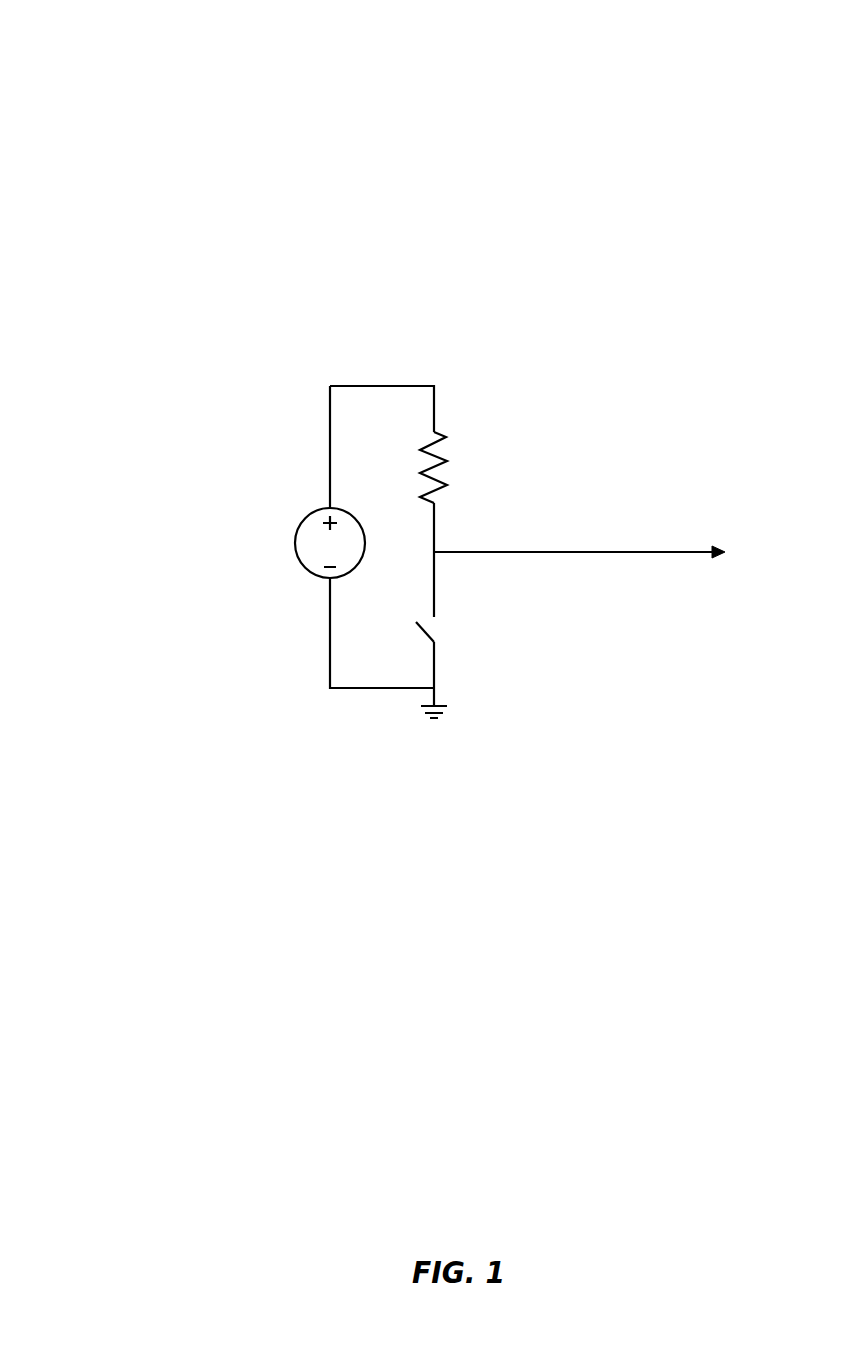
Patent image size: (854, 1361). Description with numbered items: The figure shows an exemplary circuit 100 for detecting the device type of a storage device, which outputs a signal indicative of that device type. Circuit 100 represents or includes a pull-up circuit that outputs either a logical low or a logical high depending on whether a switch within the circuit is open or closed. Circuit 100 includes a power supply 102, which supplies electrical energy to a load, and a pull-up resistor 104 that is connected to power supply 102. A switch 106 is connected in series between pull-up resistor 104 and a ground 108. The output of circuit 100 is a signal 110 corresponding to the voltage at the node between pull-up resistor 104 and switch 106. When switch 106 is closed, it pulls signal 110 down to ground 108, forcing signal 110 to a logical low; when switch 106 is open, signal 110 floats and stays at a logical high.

The circuit 100 is at (97, 108).
The power supply 102 is at (302, 522).
The pull-up resistor 104 is at (440, 447).
The switch 106 is at (427, 630).
The ground 108 is at (420, 707).
The signal 110 is at (652, 550).